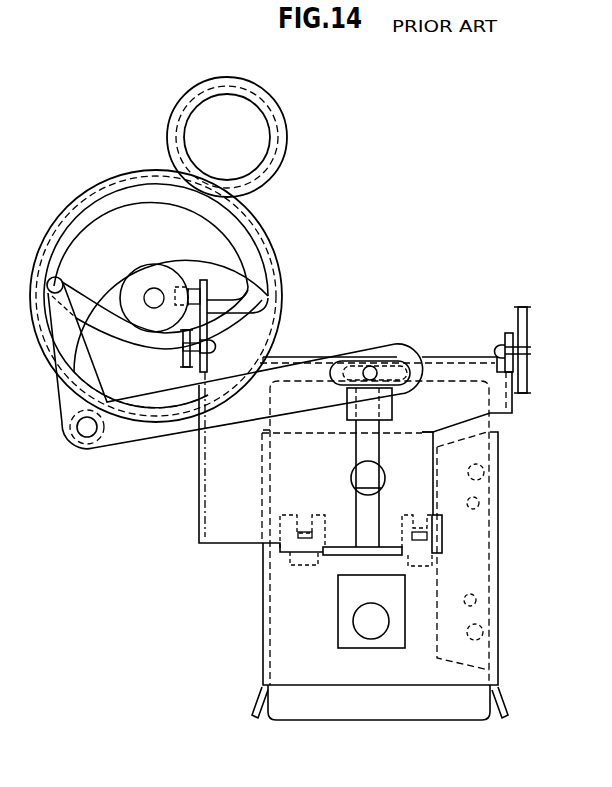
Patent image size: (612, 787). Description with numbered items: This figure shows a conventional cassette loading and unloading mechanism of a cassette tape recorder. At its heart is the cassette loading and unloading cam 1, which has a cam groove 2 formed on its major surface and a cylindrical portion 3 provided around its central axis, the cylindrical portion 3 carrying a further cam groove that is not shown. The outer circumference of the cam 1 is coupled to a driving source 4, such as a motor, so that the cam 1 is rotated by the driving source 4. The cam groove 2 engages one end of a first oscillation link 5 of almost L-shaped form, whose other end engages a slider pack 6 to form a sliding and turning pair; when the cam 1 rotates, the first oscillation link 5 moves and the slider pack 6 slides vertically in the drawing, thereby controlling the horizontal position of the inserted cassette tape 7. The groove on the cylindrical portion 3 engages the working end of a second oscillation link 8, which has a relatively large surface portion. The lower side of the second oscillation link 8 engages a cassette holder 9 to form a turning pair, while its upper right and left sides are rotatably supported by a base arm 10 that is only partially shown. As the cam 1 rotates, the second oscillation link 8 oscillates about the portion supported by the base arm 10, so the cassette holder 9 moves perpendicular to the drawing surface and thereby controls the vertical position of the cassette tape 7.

The cassette loading and unloading cam 1 is at (127, 227).
The cam groove 2 is at (242, 243).
The cylindrical portion 3 is at (156, 265).
The driving source 4 is at (265, 123).
The first oscillation link 5 is at (67, 398).
The slider pack 6 is at (430, 356).
The cassette tape 7 is at (375, 707).
The second oscillation link 8 is at (203, 300).
The cassette holder 9 is at (257, 712).
The base arm 10 is at (183, 356).